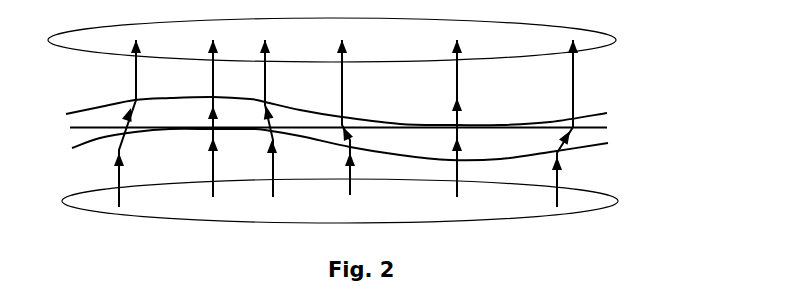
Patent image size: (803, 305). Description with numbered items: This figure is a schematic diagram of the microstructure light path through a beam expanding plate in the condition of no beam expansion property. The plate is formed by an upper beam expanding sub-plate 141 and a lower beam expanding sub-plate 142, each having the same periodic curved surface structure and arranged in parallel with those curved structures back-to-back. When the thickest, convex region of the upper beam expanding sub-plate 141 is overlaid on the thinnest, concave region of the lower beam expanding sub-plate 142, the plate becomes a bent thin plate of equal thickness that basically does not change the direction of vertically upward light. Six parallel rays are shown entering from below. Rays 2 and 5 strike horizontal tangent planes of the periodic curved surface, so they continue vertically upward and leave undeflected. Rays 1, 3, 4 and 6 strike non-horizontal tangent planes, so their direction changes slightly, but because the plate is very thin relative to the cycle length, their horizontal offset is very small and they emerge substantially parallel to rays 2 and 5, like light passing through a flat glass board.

The ray 1 is at (127, 124).
The ray 2 is at (222, 124).
The ray 3 is at (280, 124).
The ray 4 is at (357, 126).
The ray 5 is at (466, 124).
The ray 6 is at (565, 124).
The upper beam expanding sub-plate 141 is at (616, 108).
The lower beam expanding sub-plate 142 is at (590, 140).